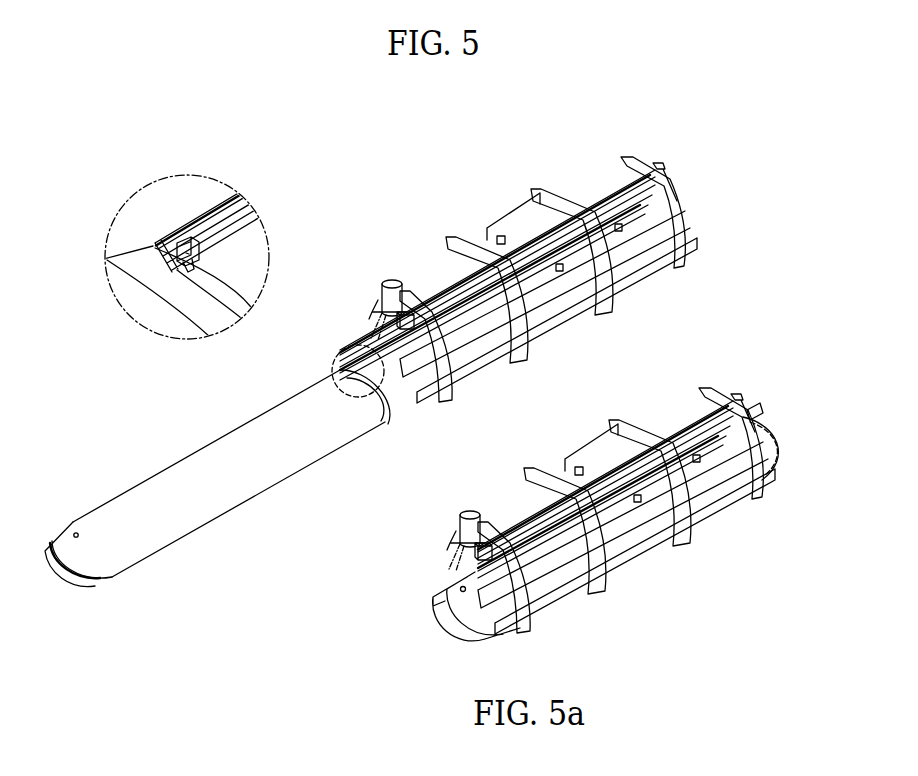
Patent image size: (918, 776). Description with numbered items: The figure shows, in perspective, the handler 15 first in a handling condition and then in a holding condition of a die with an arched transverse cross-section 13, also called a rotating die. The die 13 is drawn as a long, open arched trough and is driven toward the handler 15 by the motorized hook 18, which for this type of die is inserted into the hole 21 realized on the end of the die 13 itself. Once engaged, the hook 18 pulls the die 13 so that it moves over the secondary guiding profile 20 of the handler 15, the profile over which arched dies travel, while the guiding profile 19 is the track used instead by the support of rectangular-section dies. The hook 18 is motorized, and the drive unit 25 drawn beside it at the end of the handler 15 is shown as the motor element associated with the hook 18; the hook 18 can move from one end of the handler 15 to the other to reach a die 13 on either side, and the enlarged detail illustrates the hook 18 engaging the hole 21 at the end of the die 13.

In FIG. 5, the die with an arched transverse cross-section 13 is at (181, 458).
In FIG. 5A, the die with an arched transverse cross-section 13 is at (563, 570).
In FIG. 5, the handler 15 is at (455, 194).
In FIG. 5, the hook 18 is at (152, 247).
In FIG. 5A, the hook 18 is at (757, 430).
In FIG. 5, the guiding profile 19 is at (404, 388).
In FIG. 5, the secondary guiding profile 20 is at (482, 375).
In FIG. 5A, the secondary guiding profile 20 is at (653, 558).
In FIG. 5, the hole 21 is at (77, 532).
In FIG. 5, the motor / drive unit 25 is at (383, 289).